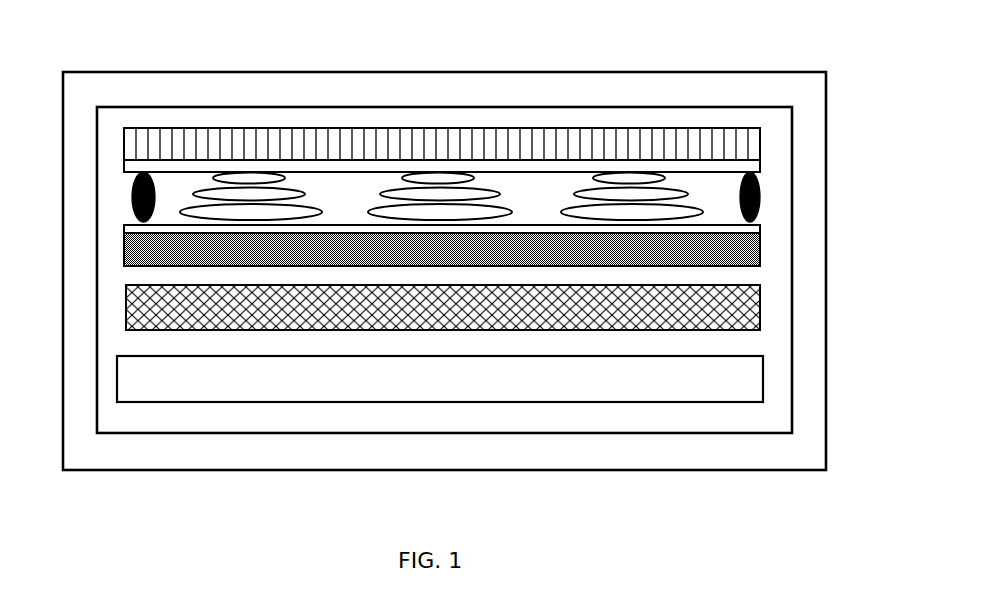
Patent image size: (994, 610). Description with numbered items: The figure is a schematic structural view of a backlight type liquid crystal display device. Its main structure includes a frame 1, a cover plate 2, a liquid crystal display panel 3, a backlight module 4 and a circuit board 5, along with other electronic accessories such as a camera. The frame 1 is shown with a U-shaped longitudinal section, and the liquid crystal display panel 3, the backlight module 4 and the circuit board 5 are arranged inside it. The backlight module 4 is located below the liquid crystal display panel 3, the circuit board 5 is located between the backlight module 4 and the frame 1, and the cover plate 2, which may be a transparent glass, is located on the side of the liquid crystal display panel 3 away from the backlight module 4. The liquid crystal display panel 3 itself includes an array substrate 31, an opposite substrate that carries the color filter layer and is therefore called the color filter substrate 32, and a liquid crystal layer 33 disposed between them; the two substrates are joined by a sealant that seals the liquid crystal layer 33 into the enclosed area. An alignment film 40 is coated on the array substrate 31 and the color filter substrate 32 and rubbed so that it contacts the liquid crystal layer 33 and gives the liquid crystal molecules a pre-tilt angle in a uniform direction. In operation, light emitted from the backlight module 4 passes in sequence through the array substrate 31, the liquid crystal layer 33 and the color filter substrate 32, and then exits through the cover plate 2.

The frame 1 is at (696, 448).
The cover plate 2 is at (678, 88).
The liquid crystal display panel 3 is at (522, 197).
The array substrate 31 is at (504, 245).
The color filter substrate 32 is at (760, 147).
The liquid crystal layer 33 is at (665, 193).
The alignment film 40 is at (163, 168).
The backlight module 4 is at (743, 306).
The circuit board 5 is at (737, 377).